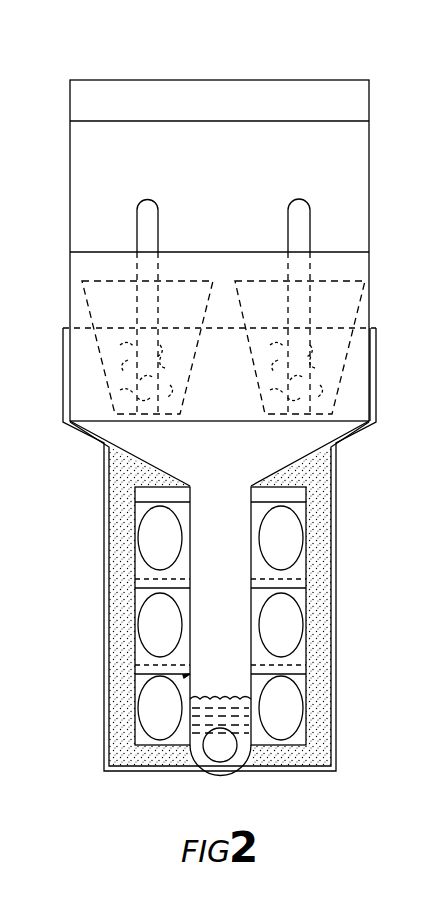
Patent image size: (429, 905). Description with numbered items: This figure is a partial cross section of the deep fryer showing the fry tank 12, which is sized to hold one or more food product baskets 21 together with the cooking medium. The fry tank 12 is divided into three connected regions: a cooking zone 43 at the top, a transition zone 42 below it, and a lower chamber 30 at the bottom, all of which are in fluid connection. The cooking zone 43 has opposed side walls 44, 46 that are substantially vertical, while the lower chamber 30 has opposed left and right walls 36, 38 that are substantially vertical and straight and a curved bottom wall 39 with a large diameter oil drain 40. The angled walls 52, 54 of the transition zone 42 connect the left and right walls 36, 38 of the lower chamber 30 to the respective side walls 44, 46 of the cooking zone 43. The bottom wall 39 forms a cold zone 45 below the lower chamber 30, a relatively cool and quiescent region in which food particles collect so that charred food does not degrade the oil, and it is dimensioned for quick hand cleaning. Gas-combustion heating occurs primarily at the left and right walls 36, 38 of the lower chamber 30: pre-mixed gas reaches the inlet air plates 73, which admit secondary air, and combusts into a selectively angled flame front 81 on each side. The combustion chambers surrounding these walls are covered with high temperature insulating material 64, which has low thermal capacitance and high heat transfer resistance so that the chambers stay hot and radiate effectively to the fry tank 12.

The fry tank 12 is at (348, 270).
The baskets 21 is at (126, 314).
The lower chamber 30 is at (233, 672).
The left wall 36 is at (184, 676).
The right wall 38 is at (256, 675).
The bottom wall 39 is at (232, 778).
The oil drain 40 is at (217, 753).
The transition zone 42 is at (233, 465).
The cooking zone 43 is at (231, 389).
The side wall 44 is at (63, 368).
The cold zone 45 is at (195, 753).
The side wall 46 is at (370, 357).
The angled wall 52 is at (138, 457).
The angled wall 54 is at (353, 433).
The insulating material 64 is at (118, 555).
The inlet air plate 73 is at (140, 512).
The flame front 81 is at (173, 549).